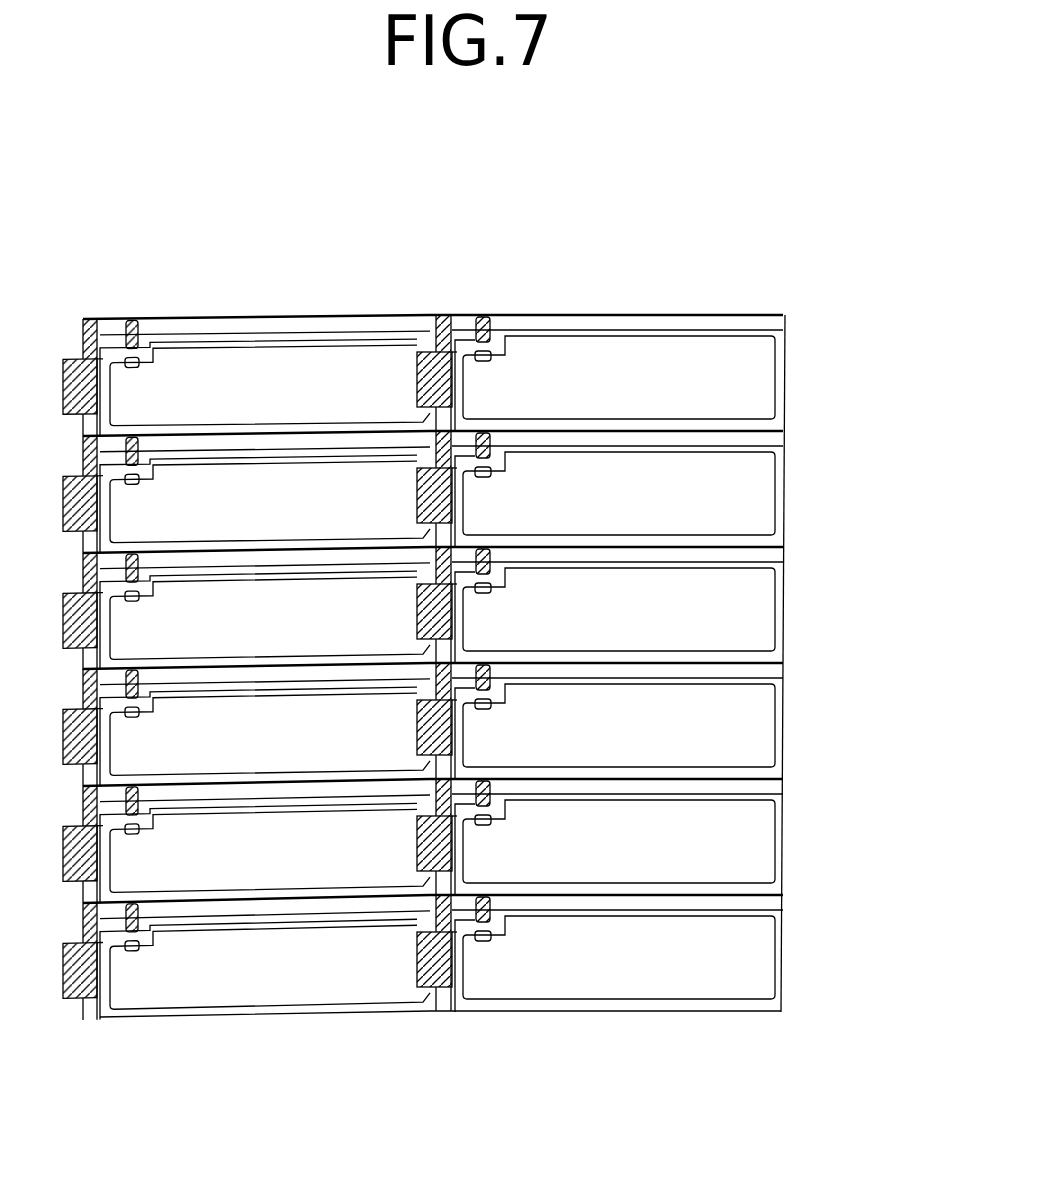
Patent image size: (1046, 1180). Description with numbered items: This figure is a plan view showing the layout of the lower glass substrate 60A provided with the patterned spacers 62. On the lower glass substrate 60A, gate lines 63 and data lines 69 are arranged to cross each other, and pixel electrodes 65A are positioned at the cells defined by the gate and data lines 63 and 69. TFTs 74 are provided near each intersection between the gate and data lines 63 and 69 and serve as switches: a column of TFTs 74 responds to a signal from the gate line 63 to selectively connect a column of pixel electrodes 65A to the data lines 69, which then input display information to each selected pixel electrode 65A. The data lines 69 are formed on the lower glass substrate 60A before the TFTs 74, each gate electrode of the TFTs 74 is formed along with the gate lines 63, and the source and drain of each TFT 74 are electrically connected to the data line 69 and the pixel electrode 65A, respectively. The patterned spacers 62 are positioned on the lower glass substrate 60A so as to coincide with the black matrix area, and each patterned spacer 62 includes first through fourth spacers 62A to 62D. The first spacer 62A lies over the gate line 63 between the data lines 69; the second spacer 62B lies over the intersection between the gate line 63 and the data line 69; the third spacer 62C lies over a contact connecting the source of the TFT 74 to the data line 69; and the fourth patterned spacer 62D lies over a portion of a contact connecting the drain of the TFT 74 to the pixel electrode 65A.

The patterned spacer 62 is at (446, 314).
The first spacer 62A is at (418, 955).
The second spacer 62B is at (430, 918).
The third spacer 62C is at (483, 897).
The fourth patterned spacer 62D is at (490, 934).
The TFT 74 is at (492, 474).
The data line 69 is at (760, 898).
The gate line 63 is at (449, 1014).
The pixel electrode 65A is at (625, 983).
The lower glass substrate 60A is at (398, 1100).